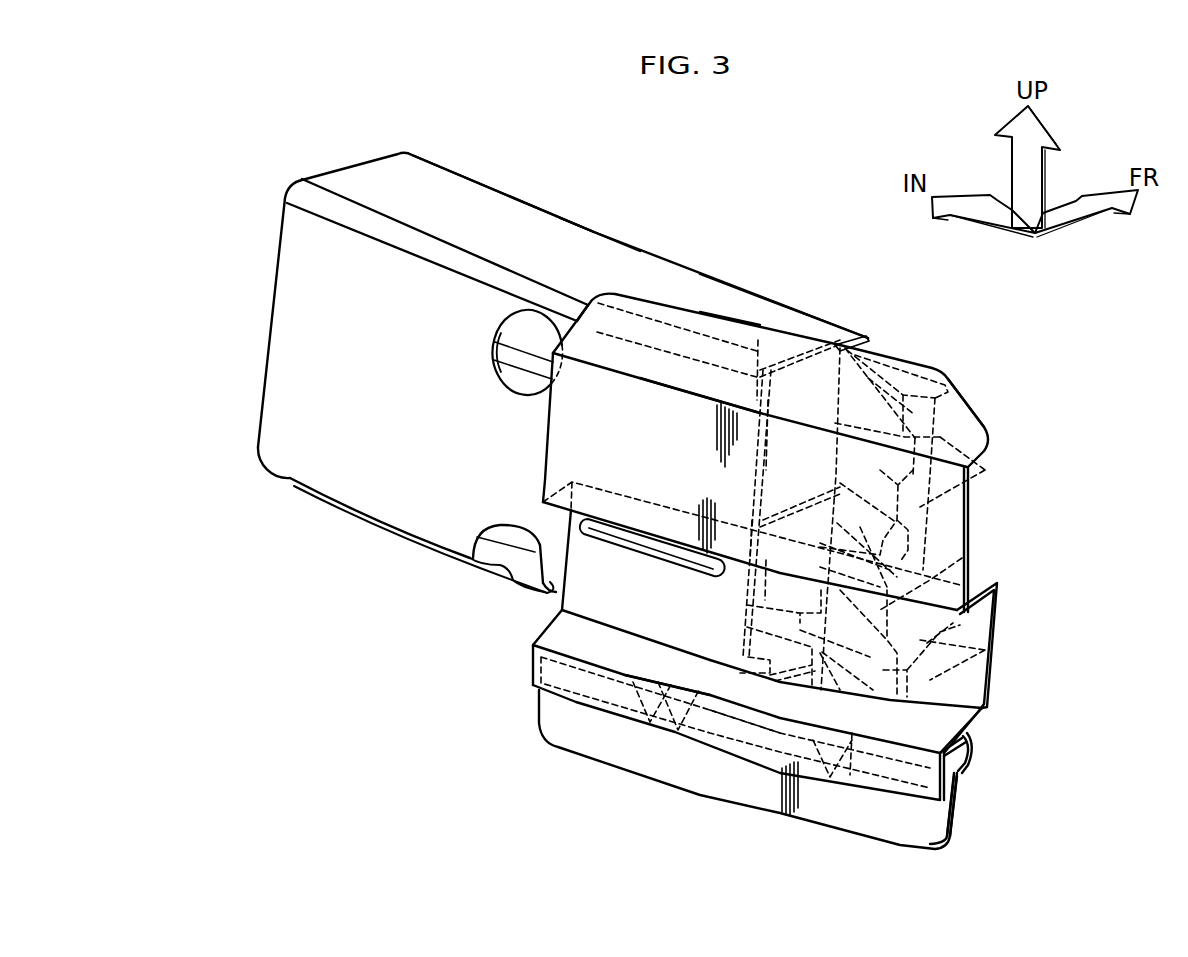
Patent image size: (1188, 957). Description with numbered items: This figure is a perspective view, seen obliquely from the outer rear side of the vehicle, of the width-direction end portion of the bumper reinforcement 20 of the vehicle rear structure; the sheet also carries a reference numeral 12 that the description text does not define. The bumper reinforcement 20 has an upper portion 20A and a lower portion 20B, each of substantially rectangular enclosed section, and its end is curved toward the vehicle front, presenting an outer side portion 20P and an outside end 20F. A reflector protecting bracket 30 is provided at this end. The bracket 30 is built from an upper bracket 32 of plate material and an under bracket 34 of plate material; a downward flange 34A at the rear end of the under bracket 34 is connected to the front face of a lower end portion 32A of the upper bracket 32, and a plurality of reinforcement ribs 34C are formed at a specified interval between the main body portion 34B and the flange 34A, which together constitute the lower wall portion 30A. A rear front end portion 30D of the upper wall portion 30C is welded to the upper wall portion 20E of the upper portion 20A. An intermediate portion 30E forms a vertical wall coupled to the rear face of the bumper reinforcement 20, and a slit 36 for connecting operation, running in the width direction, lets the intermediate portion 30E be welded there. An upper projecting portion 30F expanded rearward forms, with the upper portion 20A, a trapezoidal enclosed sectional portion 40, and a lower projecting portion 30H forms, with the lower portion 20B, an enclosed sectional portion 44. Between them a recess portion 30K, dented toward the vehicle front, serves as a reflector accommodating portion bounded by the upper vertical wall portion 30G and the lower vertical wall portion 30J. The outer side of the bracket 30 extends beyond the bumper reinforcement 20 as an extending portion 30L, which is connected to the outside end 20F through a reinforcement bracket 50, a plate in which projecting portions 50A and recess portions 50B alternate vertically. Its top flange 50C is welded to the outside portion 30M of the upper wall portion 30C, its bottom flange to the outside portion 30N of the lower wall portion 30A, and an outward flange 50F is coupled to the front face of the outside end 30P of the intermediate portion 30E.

The vehicle body member 12 is at (459, 133).
The bumper reinforcement 20 is at (518, 176).
The upper wall portion 20E is at (603, 262).
The upper portion 20A is at (781, 291).
The outside end 20F is at (843, 343).
The outer side portion 20P is at (703, 380).
The lower portion 20B is at (697, 613).
The reflector protecting bracket 30 is at (1080, 690).
The lower wall portion 30A is at (530, 645).
The upper wall portion 30C is at (662, 340).
The rear front end portion 30D is at (737, 333).
The intermediate portion 30E is at (574, 556).
The projecting portion 30F is at (536, 417).
The upper vertical wall portion 30G is at (545, 456).
The projecting portion 30H is at (523, 677).
The lower vertical wall portion 30J is at (578, 683).
The recess portion 30K is at (576, 580).
The extending portion 30L is at (924, 342).
The outside portion 30M is at (952, 397).
The outside portion 30N is at (988, 700).
The outside end 30P is at (990, 598).
The upper bracket 32 is at (1010, 718).
The lower end portion 32A is at (915, 832).
The under bracket 34 is at (977, 783).
The flange 34A is at (960, 800).
The main body portion 34B is at (978, 750).
The reinforcement ribs 34C is at (668, 685).
The slit 36 is at (655, 551).
The enclosed sectional portion 40 is at (623, 412).
The enclosed sectional portion 44 is at (700, 680).
The reinforcement bracket 50 is at (935, 518).
The projecting portion 50A is at (985, 470).
The recess portion 50B is at (780, 374).
The flange 50C is at (930, 372).
The flange 50F is at (962, 558).